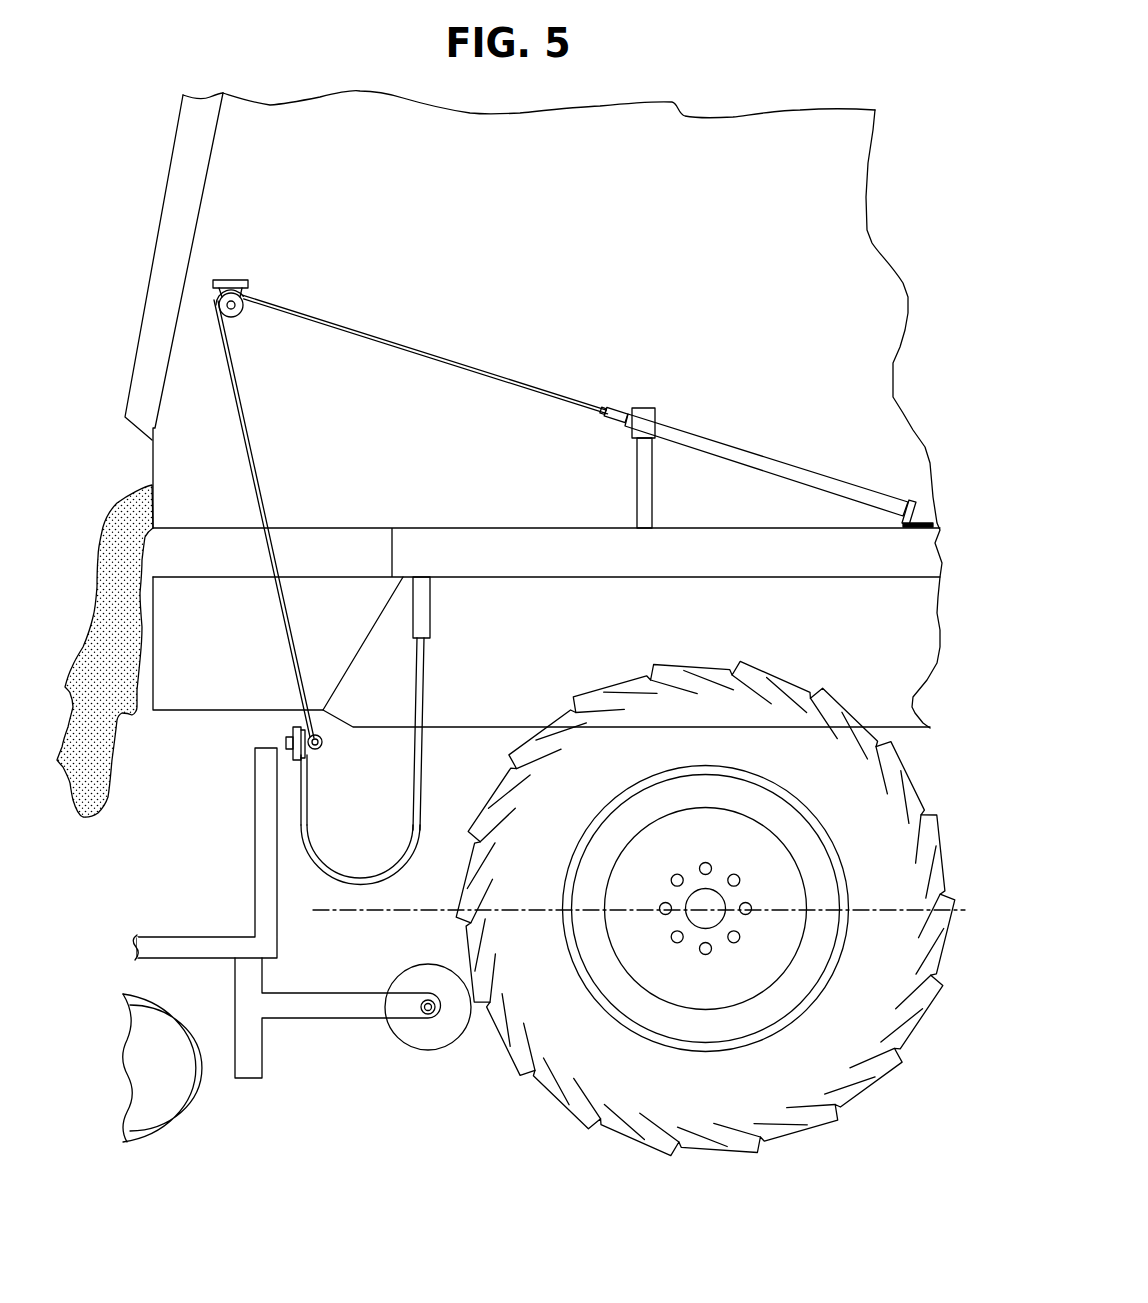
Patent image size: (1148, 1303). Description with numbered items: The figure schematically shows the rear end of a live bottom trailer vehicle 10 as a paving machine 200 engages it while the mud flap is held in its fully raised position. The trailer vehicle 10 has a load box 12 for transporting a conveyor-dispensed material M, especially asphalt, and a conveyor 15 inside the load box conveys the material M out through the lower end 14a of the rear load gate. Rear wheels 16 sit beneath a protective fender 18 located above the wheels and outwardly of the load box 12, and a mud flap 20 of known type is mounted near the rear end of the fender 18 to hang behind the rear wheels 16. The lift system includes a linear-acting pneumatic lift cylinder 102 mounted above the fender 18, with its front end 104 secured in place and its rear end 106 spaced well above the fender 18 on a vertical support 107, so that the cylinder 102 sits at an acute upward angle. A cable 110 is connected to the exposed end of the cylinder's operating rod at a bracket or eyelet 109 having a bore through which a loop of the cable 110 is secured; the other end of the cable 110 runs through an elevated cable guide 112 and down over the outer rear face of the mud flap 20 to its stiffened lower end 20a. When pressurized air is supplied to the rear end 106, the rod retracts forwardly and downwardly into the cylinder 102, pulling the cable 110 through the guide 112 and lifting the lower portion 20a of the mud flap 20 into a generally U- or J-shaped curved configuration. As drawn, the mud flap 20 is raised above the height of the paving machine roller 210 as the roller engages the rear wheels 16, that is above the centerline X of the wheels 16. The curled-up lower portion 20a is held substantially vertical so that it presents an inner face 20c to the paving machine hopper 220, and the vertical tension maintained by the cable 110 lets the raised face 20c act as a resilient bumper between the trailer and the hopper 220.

The live bottom trailer vehicle 10 is at (906, 165).
The load box 12 is at (752, 130).
The lower end of the load gate 14a is at (118, 446).
The conveyor 15 is at (131, 310).
The rear wheels 16 is at (537, 1037).
The protective fenders 18 is at (522, 530).
The mud flaps 20 is at (344, 731).
The lower end of mud flap 20a is at (298, 763).
The inner faces of mud flap 20c is at (303, 847).
The pneumatic lift cylinder 102 is at (734, 439).
The front end of cylinder 104 is at (880, 500).
The rear end of cylinder 106 is at (645, 418).
The vertical support 107 is at (652, 483).
The bracket or eyelet 109 is at (618, 410).
The cable 110 is at (410, 338).
The elevated cable guide 112 is at (232, 280).
The paving machine 200 is at (297, 963).
The paving machine roller 210 is at (410, 1033).
The paving machine hopper 220 is at (263, 898).
The conveyor-dispensed material M is at (108, 551).
The centerline of rear trailer wheels X is at (386, 912).